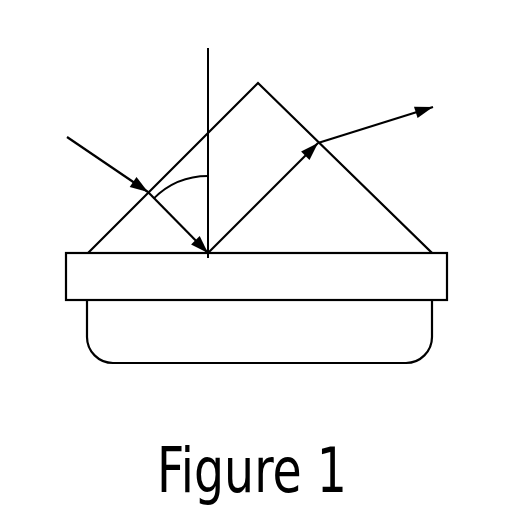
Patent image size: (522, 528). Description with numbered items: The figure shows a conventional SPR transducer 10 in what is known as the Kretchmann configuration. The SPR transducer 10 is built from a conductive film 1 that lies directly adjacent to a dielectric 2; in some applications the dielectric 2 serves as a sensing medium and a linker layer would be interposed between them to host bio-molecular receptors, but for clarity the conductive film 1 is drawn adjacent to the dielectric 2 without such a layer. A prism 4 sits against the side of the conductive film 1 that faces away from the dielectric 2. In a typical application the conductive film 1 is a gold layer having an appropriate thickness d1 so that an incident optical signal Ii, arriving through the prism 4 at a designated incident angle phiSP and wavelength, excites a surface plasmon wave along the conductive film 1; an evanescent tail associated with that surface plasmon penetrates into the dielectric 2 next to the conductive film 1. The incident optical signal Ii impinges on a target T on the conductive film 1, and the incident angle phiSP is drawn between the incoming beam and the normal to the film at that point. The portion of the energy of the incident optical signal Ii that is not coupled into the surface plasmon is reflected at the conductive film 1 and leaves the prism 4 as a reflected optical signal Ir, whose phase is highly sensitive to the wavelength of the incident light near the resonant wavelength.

The SPR transducer 10 is at (256, 183).
The prism 4 is at (265, 136).
The conductive film 1 is at (425, 289).
The dielectric 2 is at (399, 346).
The target T is at (208, 256).
The thickness d1 is at (62, 253).
The incident optical signal Ii is at (82, 148).
The reflected optical signal Ir is at (367, 132).
The incident angle phiSP is at (190, 175).